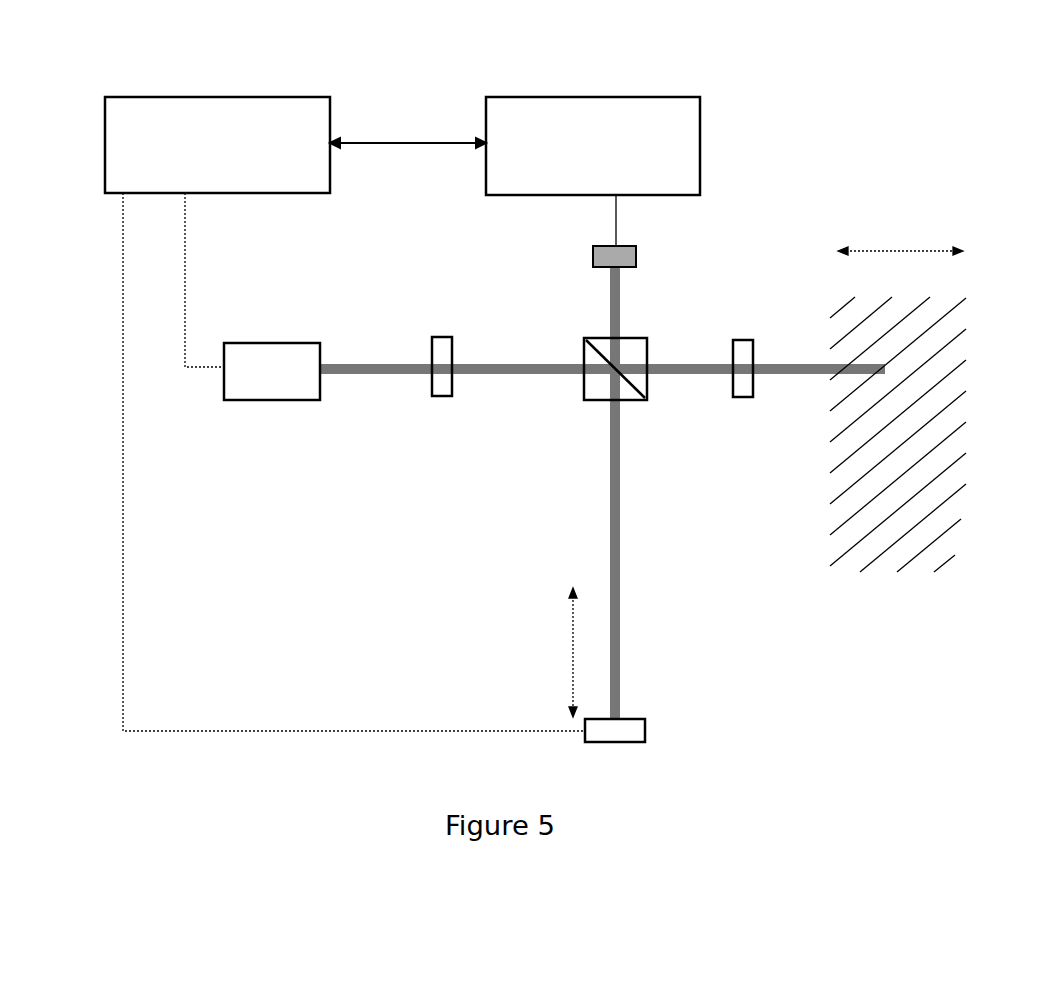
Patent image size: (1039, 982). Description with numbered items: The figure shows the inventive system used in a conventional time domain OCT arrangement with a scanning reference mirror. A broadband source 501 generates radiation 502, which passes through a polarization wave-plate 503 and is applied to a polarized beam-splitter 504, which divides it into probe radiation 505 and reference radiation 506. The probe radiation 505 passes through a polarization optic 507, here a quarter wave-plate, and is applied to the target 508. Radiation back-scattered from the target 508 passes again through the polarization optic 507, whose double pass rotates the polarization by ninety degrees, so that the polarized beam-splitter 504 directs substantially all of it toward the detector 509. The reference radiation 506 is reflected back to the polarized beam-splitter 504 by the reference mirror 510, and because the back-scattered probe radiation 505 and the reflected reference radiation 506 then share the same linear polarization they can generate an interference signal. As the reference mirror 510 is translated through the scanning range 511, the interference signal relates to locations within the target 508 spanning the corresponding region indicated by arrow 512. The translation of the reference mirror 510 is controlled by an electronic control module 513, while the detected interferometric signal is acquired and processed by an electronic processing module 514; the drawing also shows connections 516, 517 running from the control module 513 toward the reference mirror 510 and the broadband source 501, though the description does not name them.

The broadband source 501 is at (255, 405).
The radiation 502 is at (378, 353).
The polarization wave-plate 503 is at (455, 398).
The polarized beam-splitter 504 is at (630, 405).
The probe radiation 505 is at (695, 358).
The reference radiation 506 is at (605, 548).
The polarization optic 507 is at (745, 400).
The target 508 is at (900, 583).
The detector 509 is at (583, 255).
The reference mirror 510 is at (650, 730).
The scanning range 511 is at (565, 665).
The arrow 512 is at (882, 240).
The electronic control module 513 is at (335, 183).
The electronic processing module 514 is at (712, 112).
The control connection 516 is at (130, 518).
The control connection 517 is at (190, 232).